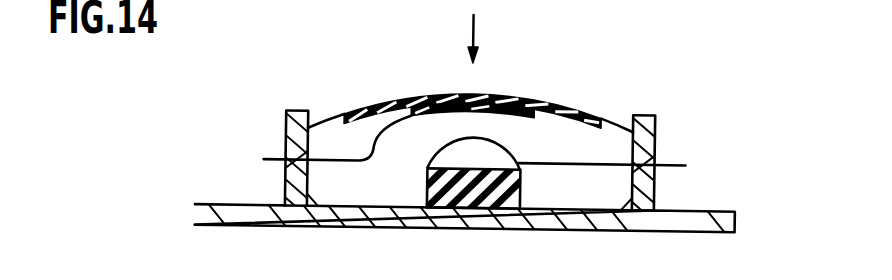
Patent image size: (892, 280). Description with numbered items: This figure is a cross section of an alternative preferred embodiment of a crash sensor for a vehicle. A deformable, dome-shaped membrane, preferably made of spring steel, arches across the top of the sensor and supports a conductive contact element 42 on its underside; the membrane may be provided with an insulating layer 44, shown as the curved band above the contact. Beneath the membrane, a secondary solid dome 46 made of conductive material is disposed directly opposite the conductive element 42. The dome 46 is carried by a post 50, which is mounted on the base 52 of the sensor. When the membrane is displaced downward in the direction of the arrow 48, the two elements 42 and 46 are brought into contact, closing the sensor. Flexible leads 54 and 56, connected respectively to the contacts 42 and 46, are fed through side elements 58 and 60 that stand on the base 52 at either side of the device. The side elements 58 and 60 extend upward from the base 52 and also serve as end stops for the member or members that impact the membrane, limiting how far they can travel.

The conductive contact element 42 is at (510, 118).
The insulating layer 44 is at (392, 103).
The secondary solid dome 46 is at (442, 148).
The arrow 48 is at (473, 27).
The post 50 is at (522, 180).
The base 52 is at (722, 208).
The flexible lead 54 is at (335, 162).
The flexible lead 56 is at (607, 162).
The side element 58 is at (285, 122).
The side element 60 is at (656, 135).